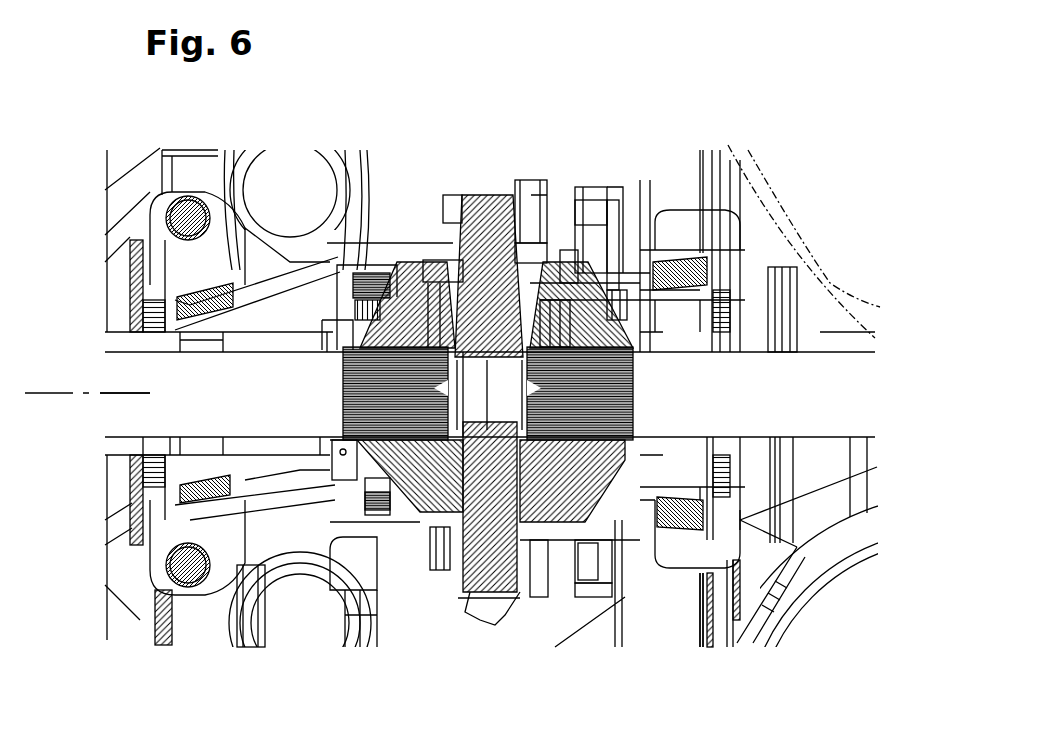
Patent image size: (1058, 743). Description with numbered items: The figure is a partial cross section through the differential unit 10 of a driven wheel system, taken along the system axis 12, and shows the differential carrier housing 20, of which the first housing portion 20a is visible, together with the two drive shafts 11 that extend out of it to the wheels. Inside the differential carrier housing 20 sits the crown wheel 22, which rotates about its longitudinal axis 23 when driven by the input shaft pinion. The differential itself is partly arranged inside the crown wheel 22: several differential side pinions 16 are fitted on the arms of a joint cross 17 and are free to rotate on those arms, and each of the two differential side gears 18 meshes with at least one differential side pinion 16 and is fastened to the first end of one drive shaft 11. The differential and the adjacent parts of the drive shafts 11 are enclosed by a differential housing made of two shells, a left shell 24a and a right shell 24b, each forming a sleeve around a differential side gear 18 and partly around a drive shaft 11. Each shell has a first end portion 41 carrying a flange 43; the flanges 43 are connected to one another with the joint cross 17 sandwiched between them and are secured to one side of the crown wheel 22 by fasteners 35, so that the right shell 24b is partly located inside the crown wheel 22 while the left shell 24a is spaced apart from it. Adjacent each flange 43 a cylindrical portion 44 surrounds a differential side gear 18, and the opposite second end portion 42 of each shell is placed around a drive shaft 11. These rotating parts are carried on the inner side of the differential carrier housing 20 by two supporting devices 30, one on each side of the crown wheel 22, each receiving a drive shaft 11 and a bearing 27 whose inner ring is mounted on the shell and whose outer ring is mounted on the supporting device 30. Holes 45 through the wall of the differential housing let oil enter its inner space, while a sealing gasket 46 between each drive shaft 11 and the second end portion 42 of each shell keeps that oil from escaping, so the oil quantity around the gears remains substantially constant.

The differential unit 10 is at (172, 673).
The drive shaft 11 is at (128, 373).
The axis 12 is at (62, 398).
The differential side pinion 16 is at (435, 257).
The joint cross 17 is at (487, 183).
The differential side gear 18 is at (410, 490).
The differential carrier housing 20 is at (820, 303).
The first housing portion 20a is at (814, 228).
The crown wheel 22 is at (582, 165).
The longitudinal axis 23 is at (85, 432).
The left shell 24a is at (283, 478).
The right shell 24b is at (620, 507).
The bearing 27 is at (693, 250).
The supporting device 30 is at (720, 237).
The fastener 35 is at (640, 235).
The first end portion 41 is at (455, 598).
The second end portion 42 is at (236, 475).
The flange 43 is at (452, 197).
The portion 44 is at (410, 257).
The hole 45 is at (383, 257).
The sealing gasket 46 is at (680, 333).